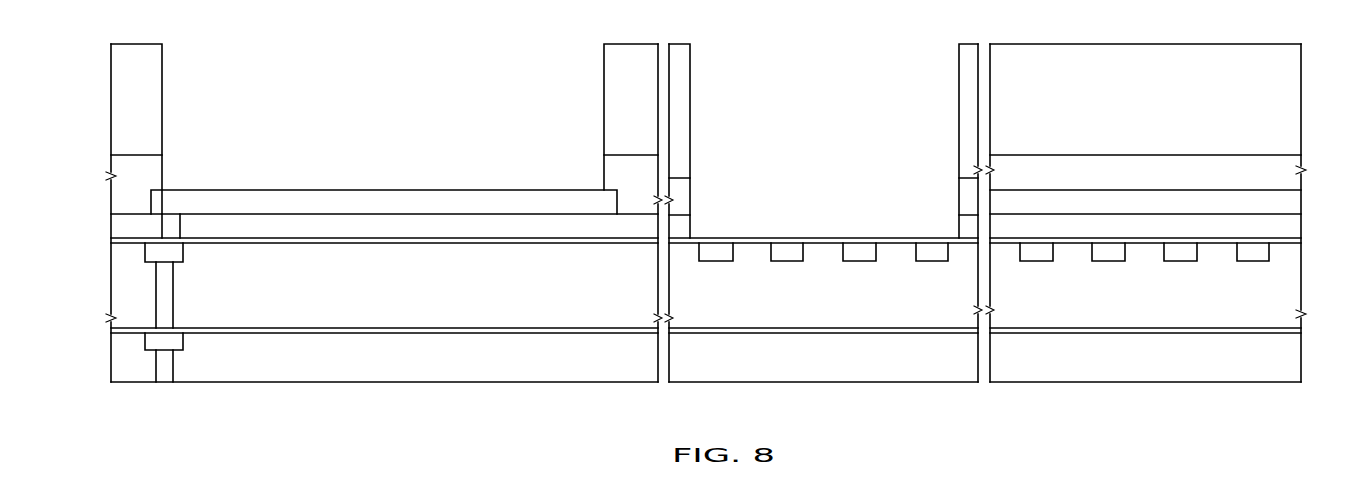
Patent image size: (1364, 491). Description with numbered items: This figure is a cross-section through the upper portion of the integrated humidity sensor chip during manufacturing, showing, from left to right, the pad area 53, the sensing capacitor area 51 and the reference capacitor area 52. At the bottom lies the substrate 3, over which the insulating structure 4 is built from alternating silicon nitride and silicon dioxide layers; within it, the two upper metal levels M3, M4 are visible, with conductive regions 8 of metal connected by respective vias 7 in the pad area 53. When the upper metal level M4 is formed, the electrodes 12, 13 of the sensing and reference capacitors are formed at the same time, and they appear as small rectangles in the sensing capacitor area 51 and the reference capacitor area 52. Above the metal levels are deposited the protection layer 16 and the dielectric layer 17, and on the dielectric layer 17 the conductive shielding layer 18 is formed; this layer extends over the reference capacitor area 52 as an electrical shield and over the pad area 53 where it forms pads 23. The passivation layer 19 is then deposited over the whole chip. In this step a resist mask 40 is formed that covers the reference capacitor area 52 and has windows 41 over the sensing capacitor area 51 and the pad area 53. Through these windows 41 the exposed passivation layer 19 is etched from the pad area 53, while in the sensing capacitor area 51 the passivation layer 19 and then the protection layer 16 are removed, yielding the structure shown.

The substrate 3 is at (293, 366).
The insulating structure 4 is at (141, 321).
The via 7 is at (172, 228).
The conductive region 8 is at (181, 248).
The electrode 12 is at (718, 262).
The electrode 13 is at (787, 262).
The protection layer 16 is at (1300, 241).
The dielectric layer 17 is at (348, 224).
The conductive shielding layer 18 is at (1296, 201).
The passivation layer 19 is at (121, 200).
The pad 23 is at (207, 198).
The resist mask 40 is at (153, 84).
The window 41 is at (390, 38).
The sensing capacitor area 51 is at (818, 299).
The reference capacitor area 52 is at (1147, 297).
The pad area 53 is at (413, 300).
The third metal level M3 is at (134, 343).
The fourth metal level M4 is at (136, 254).